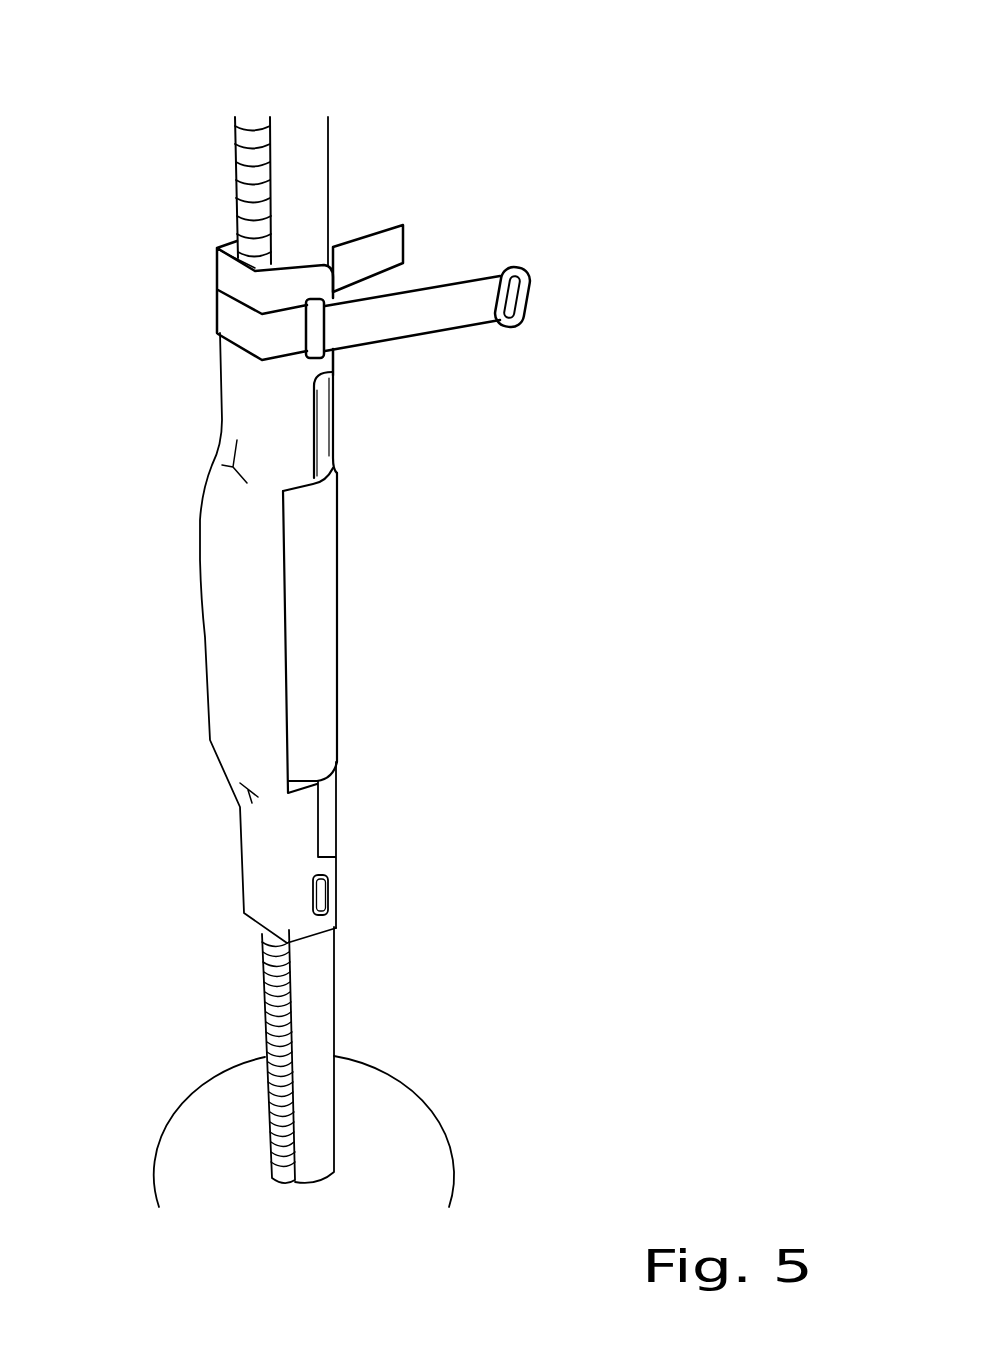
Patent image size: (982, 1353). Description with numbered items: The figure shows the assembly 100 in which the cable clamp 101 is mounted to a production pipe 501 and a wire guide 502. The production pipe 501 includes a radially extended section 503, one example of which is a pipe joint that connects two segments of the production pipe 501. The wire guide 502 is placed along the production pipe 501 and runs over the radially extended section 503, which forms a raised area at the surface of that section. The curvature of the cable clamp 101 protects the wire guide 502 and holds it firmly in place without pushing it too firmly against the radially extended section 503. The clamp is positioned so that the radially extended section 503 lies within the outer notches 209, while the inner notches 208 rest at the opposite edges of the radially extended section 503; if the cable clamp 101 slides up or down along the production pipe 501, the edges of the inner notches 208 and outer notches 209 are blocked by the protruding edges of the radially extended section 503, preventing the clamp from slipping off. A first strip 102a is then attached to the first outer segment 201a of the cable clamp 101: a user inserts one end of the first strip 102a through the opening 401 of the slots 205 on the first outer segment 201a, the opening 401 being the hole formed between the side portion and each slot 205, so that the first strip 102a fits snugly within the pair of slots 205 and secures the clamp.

The walking aid assembly 100 is at (468, 112).
The production pipe 501 is at (292, 168).
The first outer segment 201a is at (292, 297).
The opening 401 is at (310, 336).
The slot 205 is at (307, 357).
The outer notch 209 is at (322, 387).
The first strip 102a is at (413, 317).
The inner notch 208 is at (293, 492).
The radially extended section 503 is at (322, 638).
The cable clamp 101 is at (232, 670).
The wire guide 502 is at (292, 1038).